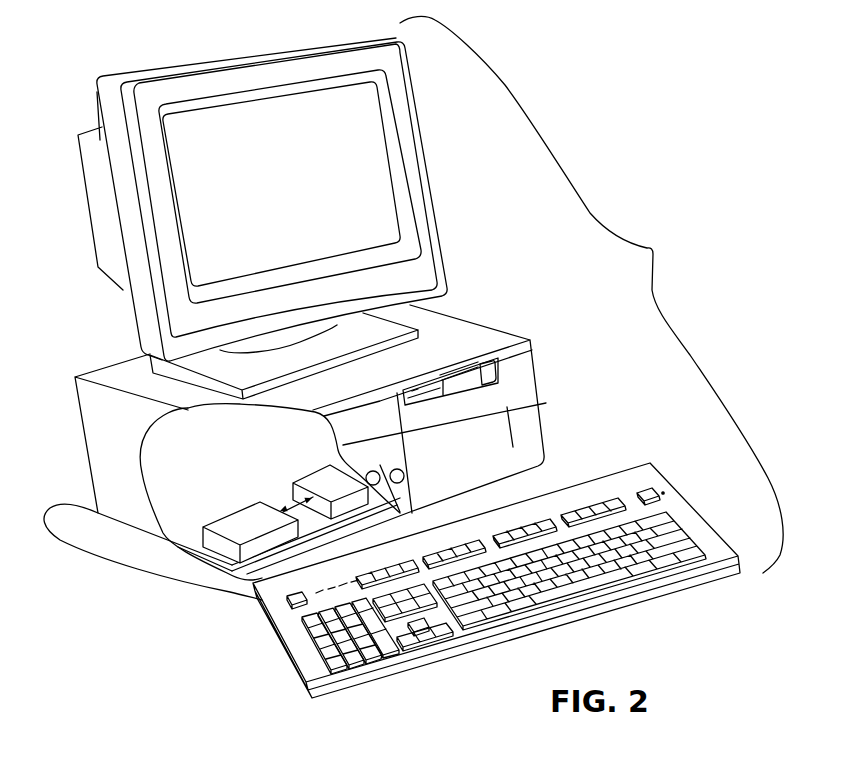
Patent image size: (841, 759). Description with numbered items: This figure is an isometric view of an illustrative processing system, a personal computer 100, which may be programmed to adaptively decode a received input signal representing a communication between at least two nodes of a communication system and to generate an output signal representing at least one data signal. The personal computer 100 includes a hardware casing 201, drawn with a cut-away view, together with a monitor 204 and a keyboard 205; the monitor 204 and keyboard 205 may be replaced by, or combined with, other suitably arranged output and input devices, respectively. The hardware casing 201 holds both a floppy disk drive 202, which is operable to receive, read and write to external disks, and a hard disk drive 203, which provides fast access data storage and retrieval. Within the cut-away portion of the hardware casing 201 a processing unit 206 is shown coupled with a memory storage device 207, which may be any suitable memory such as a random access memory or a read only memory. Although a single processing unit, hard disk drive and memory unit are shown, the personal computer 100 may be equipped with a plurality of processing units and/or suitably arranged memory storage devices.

The personal computer 100 is at (591, 294).
The hardware casing 201 is at (513, 333).
The floppy disk drive 202 is at (500, 380).
The hard disk drive 203 is at (467, 408).
The monitor 204 is at (133, 306).
The keyboard 205 is at (693, 458).
The processing unit 206 is at (305, 482).
The memory storage device 207 is at (236, 513).